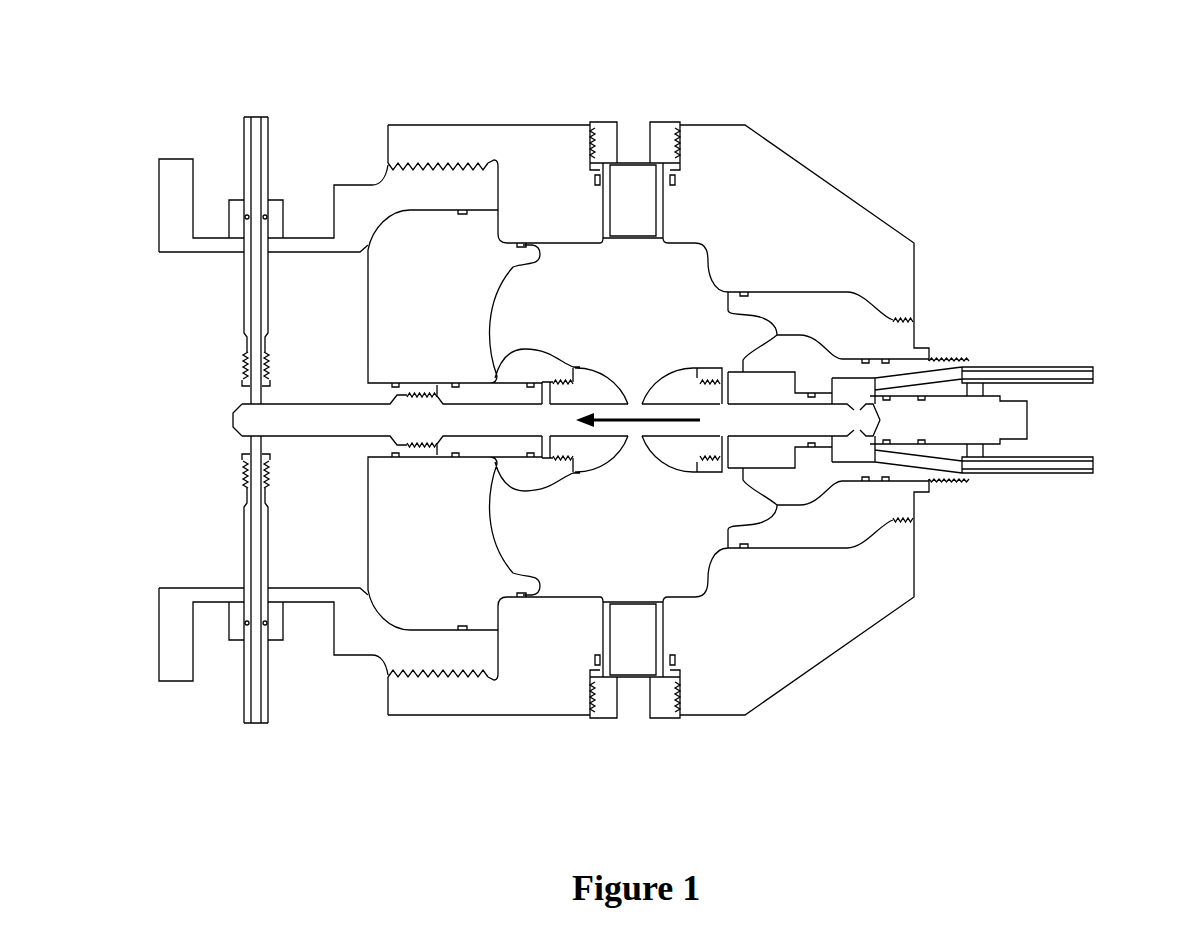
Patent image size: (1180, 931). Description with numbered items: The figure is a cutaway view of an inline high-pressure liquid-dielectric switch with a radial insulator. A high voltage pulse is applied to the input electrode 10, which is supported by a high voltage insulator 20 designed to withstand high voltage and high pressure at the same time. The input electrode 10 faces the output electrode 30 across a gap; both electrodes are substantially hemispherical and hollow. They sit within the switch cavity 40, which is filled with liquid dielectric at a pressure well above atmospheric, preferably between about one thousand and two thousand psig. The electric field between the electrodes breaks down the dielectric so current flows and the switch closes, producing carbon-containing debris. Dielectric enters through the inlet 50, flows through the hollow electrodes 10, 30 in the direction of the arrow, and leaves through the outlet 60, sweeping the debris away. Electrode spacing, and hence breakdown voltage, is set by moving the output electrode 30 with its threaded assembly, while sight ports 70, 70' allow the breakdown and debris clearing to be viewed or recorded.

The input electrode 10 is at (592, 358).
The high voltage insulator 20 is at (547, 532).
The output electrode 30 is at (663, 367).
The switch cavity 40 is at (638, 273).
The inlet 50 is at (1040, 418).
The outlet 60 is at (262, 112).
The sight port 70 is at (629, 143).
The sight port 70' is at (663, 692).